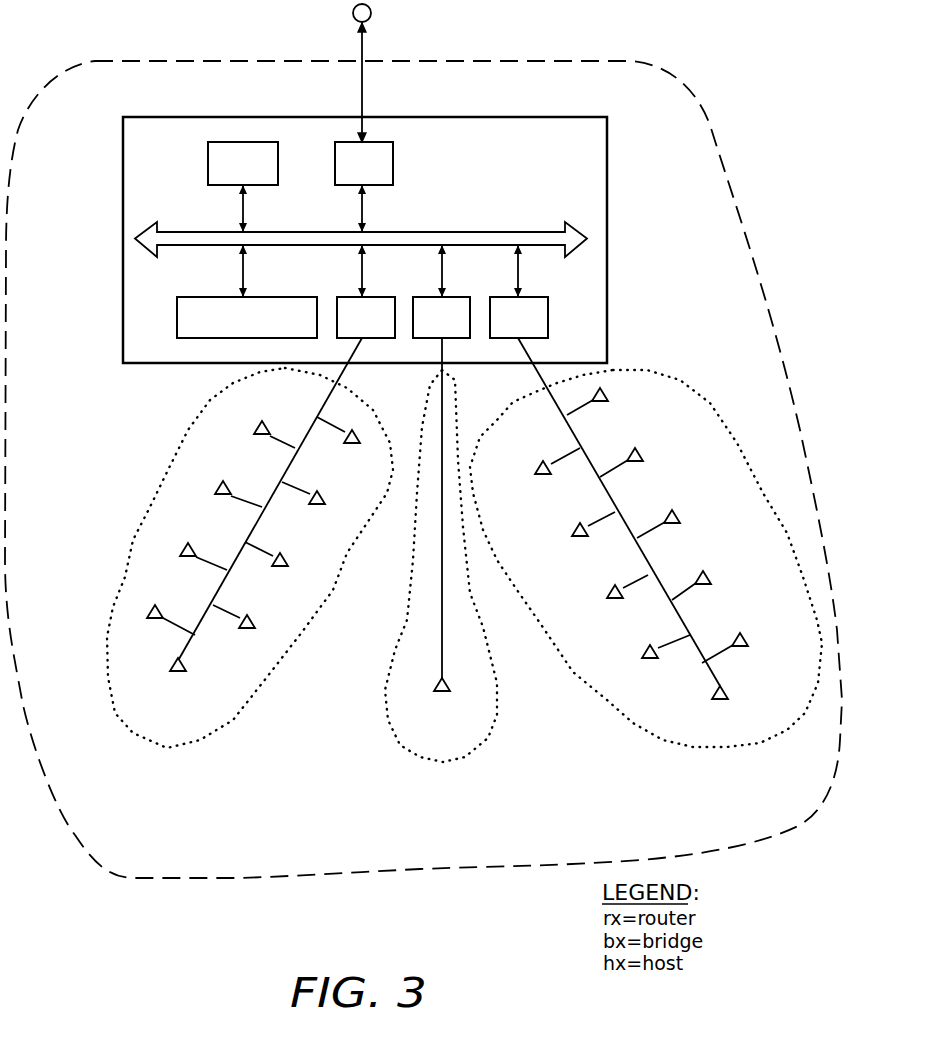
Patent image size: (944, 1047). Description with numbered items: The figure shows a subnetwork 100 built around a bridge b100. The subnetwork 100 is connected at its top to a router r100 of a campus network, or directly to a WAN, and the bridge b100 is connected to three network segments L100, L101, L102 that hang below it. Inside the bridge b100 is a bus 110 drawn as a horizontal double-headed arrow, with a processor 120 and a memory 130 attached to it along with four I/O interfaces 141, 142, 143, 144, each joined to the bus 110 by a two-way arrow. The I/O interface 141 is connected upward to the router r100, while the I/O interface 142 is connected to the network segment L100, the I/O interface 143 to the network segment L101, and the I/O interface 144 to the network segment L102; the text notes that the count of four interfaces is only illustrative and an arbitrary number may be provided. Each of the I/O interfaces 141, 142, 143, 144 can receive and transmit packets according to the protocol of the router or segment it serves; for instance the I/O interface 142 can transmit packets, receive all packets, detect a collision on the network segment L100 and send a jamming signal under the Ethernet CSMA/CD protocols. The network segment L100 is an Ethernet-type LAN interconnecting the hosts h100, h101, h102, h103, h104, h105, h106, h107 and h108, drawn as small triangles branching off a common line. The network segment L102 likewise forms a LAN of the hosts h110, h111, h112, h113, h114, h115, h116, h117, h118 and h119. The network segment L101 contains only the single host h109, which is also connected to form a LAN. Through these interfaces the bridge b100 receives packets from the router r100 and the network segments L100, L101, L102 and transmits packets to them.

The subnetwork 100 is at (80, 58).
The router r100 is at (371, 13).
The bridge b100 is at (607, 133).
The memory 130 is at (208, 148).
The I/O interface 141 is at (393, 147).
The bus 110 is at (507, 232).
The processor 120 is at (283, 297).
The I/O interface 142 is at (374, 297).
The I/O interface 143 is at (458, 298).
The I/O interface 144 is at (542, 297).
The network segment L100 is at (235, 720).
The network segment L101 is at (492, 727).
The network segment L102 is at (683, 745).
The host h100 is at (352, 444).
The host h101 is at (262, 421).
The host h102 is at (317, 505).
The host h103 is at (223, 481).
The host h104 is at (280, 567).
The host h105 is at (188, 543).
The host h106 is at (247, 629).
The host h107 is at (155, 605).
The host h108 is at (175, 672).
The host h109 is at (439, 692).
The host h110 is at (608, 396).
The host h111 is at (535, 469).
The host h112 is at (643, 456).
The host h113 is at (572, 531).
The host h114 is at (680, 518).
The host h115 is at (607, 593).
The host h116 is at (711, 579).
The host h117 is at (642, 653).
The host h118 is at (748, 641).
The host h119 is at (720, 700).